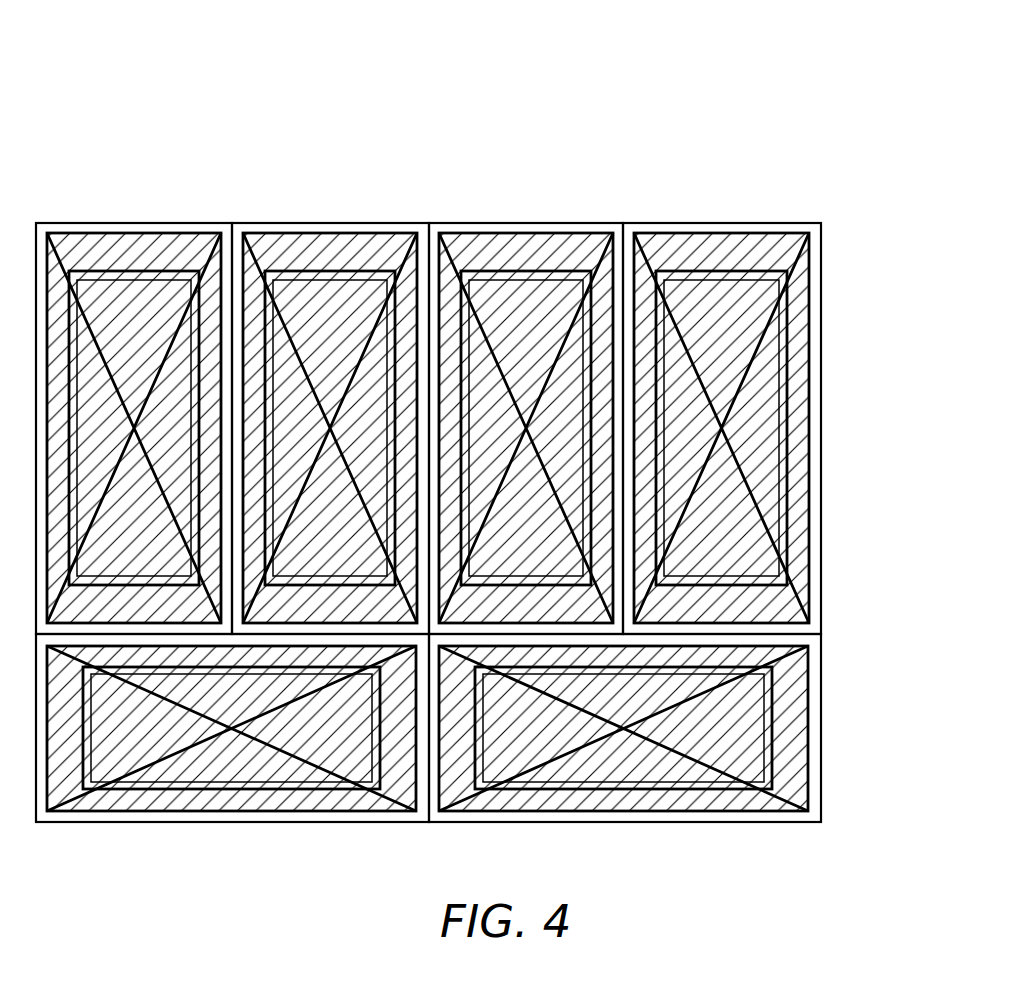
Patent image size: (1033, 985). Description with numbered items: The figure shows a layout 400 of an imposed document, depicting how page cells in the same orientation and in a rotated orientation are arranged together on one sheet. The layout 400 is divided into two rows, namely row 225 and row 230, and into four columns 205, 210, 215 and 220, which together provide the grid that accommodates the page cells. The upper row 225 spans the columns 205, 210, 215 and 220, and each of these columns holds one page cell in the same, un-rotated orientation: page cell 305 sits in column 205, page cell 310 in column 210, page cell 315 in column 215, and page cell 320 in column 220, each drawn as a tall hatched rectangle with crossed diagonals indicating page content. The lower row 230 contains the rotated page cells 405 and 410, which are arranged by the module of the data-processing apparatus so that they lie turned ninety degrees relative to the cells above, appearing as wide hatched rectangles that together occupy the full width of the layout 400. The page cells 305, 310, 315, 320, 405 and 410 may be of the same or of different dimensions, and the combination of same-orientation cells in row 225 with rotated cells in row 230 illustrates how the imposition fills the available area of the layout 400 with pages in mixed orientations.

The layout 400 is at (717, 103).
The column 205 is at (73, 222).
The column 210 is at (265, 222).
The column 215 is at (461, 222).
The column 220 is at (657, 222).
The page cell 305 is at (207, 233).
The page cell 310 is at (403, 233).
The page cell 315 is at (598, 233).
The fourth photodiode region 320 is at (795, 233).
The row 225 is at (822, 332).
The row 230 is at (822, 714).
The rotated page cell 405 is at (210, 803).
The rotated page cell 410 is at (632, 803).